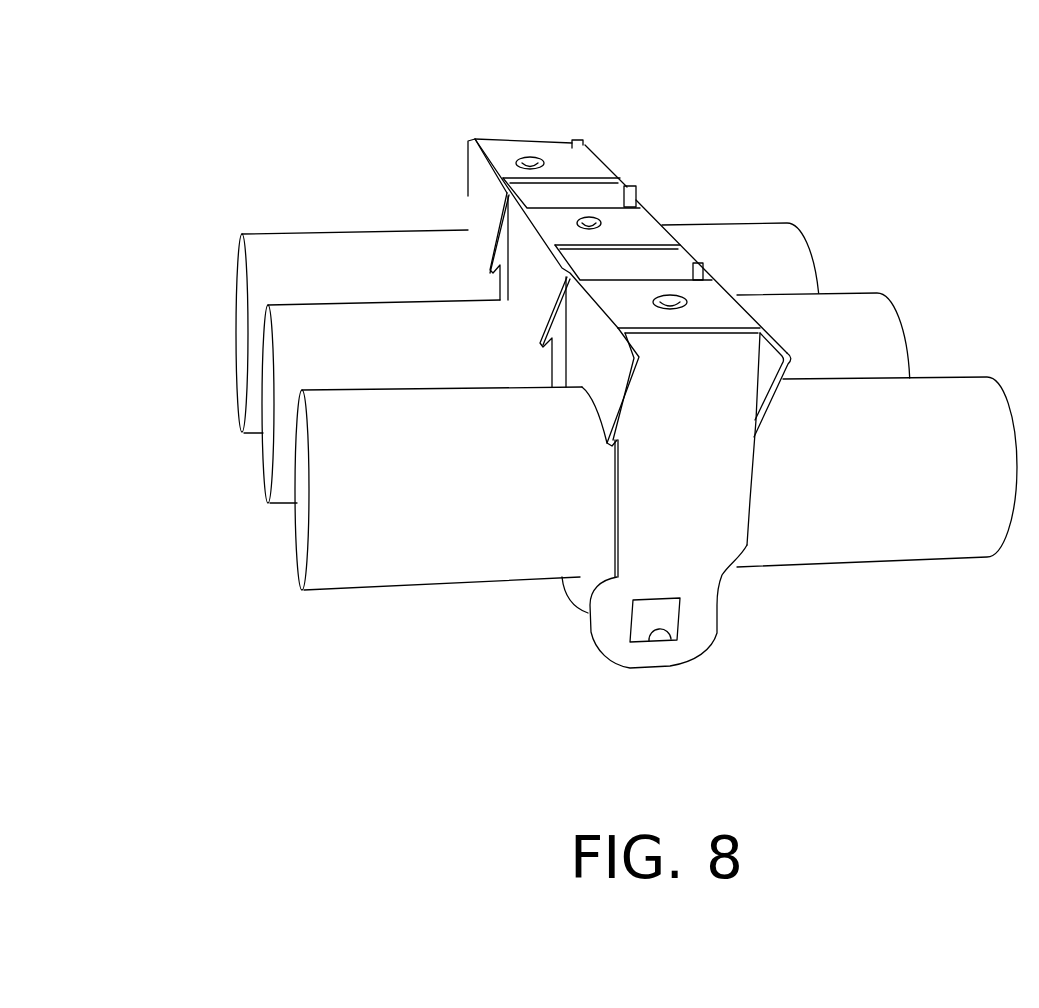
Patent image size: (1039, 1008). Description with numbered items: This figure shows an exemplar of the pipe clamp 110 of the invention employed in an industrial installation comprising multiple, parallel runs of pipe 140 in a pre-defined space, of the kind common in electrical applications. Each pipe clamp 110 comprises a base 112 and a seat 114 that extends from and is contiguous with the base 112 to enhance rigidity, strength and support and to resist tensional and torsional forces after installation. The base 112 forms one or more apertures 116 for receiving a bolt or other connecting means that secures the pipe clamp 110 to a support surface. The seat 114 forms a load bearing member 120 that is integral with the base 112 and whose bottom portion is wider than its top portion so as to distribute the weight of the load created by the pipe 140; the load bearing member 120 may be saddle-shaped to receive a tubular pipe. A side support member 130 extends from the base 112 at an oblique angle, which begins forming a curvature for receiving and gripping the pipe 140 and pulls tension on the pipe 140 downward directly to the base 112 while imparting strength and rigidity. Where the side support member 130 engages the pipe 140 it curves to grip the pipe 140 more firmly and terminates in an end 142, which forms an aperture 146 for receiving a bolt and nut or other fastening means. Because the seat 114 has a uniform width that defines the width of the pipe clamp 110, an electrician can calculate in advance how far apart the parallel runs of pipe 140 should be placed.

The pipe clamp 110 is at (711, 158).
The base 112 is at (588, 165).
The seat 114 is at (574, 370).
The apertures 116 is at (678, 300).
The load bearing member 120 is at (505, 212).
The side support member 130 is at (740, 483).
The pipe 140 is at (297, 515).
The end 142 is at (709, 607).
The aperture 146 is at (670, 634).